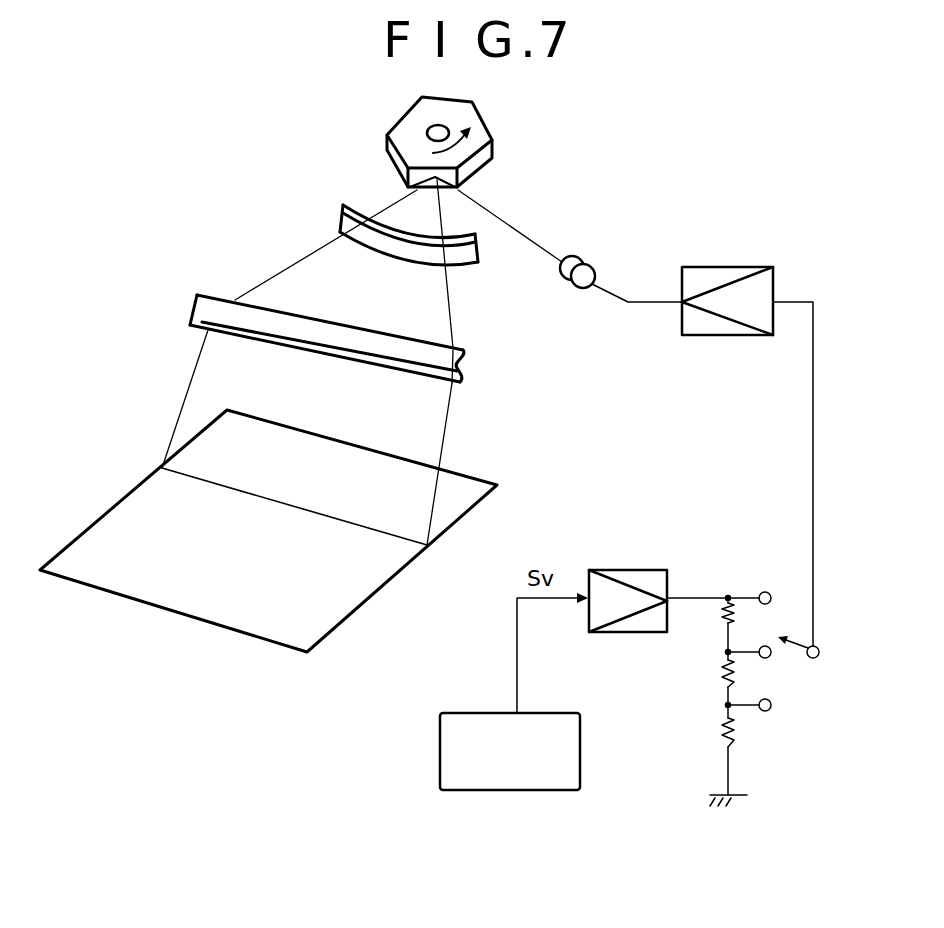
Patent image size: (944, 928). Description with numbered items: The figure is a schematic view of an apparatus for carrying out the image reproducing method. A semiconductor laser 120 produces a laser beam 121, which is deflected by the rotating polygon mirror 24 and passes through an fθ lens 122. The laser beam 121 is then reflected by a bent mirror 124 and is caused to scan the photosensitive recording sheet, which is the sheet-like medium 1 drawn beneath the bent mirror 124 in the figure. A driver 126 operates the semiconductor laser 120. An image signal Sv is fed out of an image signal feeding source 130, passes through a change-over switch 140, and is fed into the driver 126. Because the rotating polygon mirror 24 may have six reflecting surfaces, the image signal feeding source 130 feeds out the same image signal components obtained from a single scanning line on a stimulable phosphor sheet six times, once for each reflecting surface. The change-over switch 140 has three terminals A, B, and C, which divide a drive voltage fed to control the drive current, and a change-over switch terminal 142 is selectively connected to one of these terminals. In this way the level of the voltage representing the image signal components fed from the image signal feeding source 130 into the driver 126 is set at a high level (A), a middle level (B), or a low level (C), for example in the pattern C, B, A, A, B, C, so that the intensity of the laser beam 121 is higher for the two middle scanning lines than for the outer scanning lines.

The rotating polygon mirror 24 is at (405, 130).
The fθ lens 122 is at (338, 215).
The bent mirror 124 is at (198, 295).
The recording medium 1 is at (135, 505).
The laser beam 121 is at (508, 225).
The semiconductor laser 120 is at (590, 259).
The driver 126 is at (720, 267).
The change-over switch 140 is at (753, 560).
The change-over switch terminal 142 is at (812, 658).
The image signal feeding source 130 is at (440, 735).